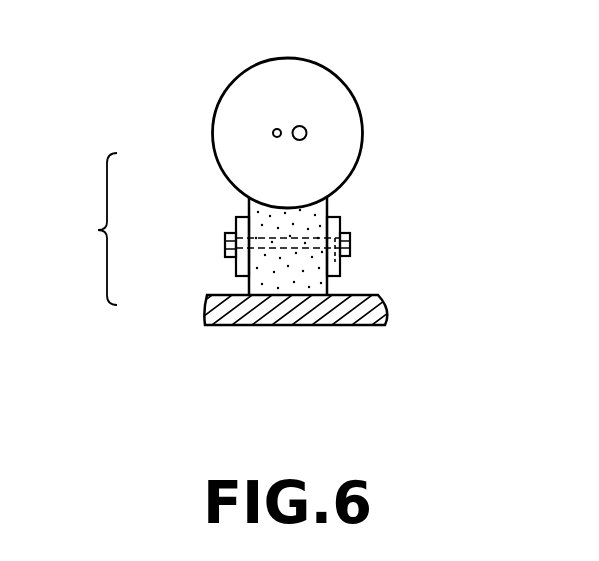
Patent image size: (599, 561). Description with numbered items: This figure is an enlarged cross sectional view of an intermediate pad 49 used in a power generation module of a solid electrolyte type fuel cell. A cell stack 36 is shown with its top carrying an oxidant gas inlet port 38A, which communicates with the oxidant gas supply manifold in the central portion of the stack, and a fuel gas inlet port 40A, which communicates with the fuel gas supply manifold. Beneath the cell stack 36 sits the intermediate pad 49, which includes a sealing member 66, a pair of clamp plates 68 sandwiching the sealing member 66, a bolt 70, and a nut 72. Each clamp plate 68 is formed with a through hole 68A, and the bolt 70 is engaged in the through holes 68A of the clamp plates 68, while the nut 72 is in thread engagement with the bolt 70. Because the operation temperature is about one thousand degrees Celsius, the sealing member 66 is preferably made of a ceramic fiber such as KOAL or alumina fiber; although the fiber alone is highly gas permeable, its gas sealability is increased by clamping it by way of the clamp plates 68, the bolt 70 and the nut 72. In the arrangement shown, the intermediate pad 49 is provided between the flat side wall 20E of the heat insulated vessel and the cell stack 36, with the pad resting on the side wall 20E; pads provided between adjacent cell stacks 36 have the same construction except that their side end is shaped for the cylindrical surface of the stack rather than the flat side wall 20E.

The cell stack 36 is at (347, 132).
The oxidant gas inlet port 38A is at (304, 127).
The fuel gas inlet port 40A is at (274, 130).
The intermediate pad 49 is at (97, 233).
The sealing member 66 is at (262, 215).
The clamp plate 68 is at (340, 225).
The through hole 68A is at (341, 266).
The bolt 70 is at (248, 267).
The nut 72 is at (348, 248).
The side wall 20E is at (370, 313).